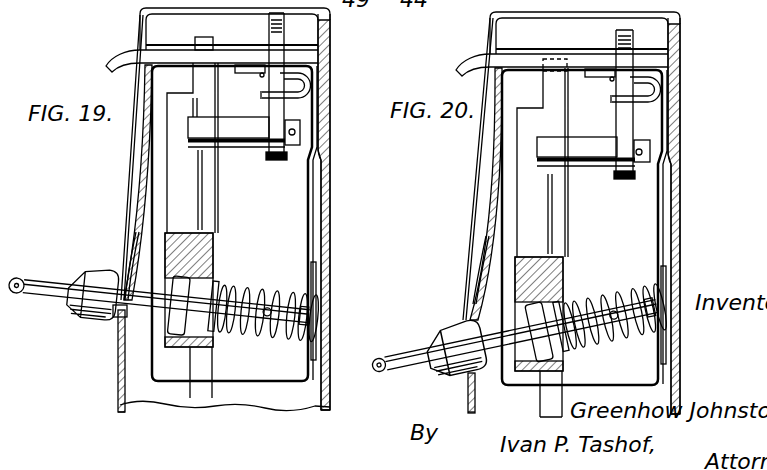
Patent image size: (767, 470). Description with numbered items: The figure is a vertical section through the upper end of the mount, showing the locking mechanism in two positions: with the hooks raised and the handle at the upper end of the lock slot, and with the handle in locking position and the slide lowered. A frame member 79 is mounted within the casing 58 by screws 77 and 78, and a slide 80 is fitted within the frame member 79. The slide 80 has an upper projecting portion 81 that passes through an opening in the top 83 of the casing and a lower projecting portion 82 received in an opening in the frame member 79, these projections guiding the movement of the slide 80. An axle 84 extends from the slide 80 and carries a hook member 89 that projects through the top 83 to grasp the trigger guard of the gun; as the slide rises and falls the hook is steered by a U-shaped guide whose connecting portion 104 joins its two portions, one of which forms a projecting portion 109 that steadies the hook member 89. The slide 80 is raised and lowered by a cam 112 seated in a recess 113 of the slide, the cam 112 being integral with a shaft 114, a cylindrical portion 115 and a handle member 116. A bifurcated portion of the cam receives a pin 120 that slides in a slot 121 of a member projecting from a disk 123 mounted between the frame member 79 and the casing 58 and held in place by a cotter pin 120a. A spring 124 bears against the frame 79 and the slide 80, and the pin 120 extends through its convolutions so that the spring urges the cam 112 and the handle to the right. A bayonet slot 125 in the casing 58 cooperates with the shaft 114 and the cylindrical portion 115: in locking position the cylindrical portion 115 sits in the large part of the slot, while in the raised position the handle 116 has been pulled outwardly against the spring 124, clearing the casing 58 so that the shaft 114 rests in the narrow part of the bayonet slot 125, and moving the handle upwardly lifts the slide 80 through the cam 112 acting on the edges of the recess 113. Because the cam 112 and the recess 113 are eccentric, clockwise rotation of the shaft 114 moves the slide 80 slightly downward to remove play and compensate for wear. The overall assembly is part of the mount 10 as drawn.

In FIG. 19, the housing 10 is at (330, 234).
In FIG. 20, the housing 10 is at (681, 295).
In FIG. 19, the casing 58 is at (323, 176).
In FIG. 20, the casing 58 is at (674, 193).
In FIG. 19, the screw 77 is at (147, 123).
In FIG. 20, the screw 77 is at (493, 132).
In FIG. 19, the screw 78 is at (331, 111).
In FIG. 20, the screw 78 is at (681, 134).
In FIG. 19, the frame member 79 is at (314, 203).
In FIG. 20, the frame member 79 is at (664, 227).
In FIG. 19, the slide 80 is at (208, 192).
In FIG. 20, the slide 80 is at (553, 199).
In FIG. 19, the upper projecting portion 81 is at (203, 36).
In FIG. 19, the lower projecting portion 82 is at (200, 390).
In FIG. 20, the lower projecting portion 82 is at (544, 396).
In FIG. 19, the top of the casing 83 is at (226, 57).
In FIG. 20, the top of the casing 83 is at (671, 62).
In FIG. 19, the axle 84 is at (230, 148).
In FIG. 20, the axle 84 is at (602, 168).
In FIG. 19, the hook member 89 is at (286, 37).
In FIG. 20, the hook member 89 is at (634, 126).
In FIG. 19, the connecting portion 104 is at (309, 83).
In FIG. 20, the connecting portion 104 is at (660, 87).
In FIG. 19, the projecting portion 109 is at (261, 95).
In FIG. 20, the projecting portion 109 is at (611, 99).
In FIG. 19, the cam 112 is at (170, 318).
In FIG. 20, the cam 112 is at (544, 300).
In FIG. 19, the recess 113 is at (205, 279).
In FIG. 20, the recess 113 is at (549, 297).
In FIG. 19, the shaft 114 is at (133, 294).
In FIG. 20, the shaft 114 is at (490, 326).
In FIG. 19, the cylindrical portion 115 is at (92, 295).
In FIG. 20, the cylindrical portion 115 is at (453, 335).
In FIG. 19, the handle member 116 is at (17, 279).
In FIG. 20, the handle member 116 is at (378, 358).
In FIG. 19, the pin 120 is at (265, 294).
In FIG. 20, the pin 120 is at (629, 312).
In FIG. 19, the cotter pin 120a is at (303, 313).
In FIG. 20, the cotter pin 120a is at (659, 318).
In FIG. 19, the slot 121 is at (283, 290).
In FIG. 19, the disk 123 is at (314, 279).
In FIG. 20, the disk 123 is at (666, 273).
In FIG. 19, the spring 124 is at (242, 332).
In FIG. 20, the spring 124 is at (599, 337).
In FIG. 19, the bayonet slot 125 is at (163, 328).
In FIG. 20, the bayonet slot 125 is at (464, 307).